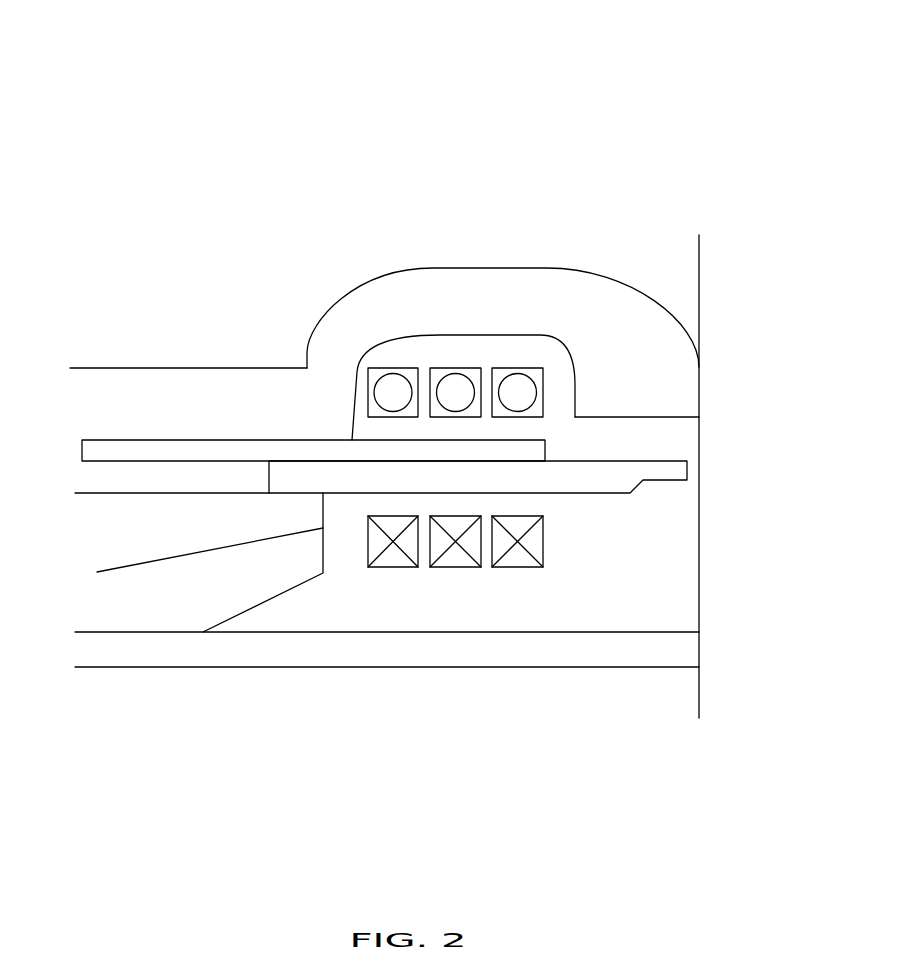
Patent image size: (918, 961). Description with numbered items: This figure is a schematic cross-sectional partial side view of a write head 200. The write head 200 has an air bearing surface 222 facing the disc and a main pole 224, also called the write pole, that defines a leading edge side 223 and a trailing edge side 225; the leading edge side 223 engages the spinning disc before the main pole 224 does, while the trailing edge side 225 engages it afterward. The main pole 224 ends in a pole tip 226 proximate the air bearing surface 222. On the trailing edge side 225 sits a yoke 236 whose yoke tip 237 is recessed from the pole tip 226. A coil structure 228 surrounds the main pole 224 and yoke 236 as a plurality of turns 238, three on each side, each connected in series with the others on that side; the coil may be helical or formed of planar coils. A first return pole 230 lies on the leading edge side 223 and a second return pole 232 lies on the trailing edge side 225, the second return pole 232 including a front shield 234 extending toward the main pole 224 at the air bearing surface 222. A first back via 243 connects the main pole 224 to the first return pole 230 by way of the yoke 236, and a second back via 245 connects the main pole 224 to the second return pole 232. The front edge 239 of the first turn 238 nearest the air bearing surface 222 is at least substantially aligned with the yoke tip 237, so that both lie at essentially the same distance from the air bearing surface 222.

The write head 200 is at (123, 69).
The air bearing surface 222 is at (699, 502).
The leading edge side 223 is at (587, 512).
The main pole 224 is at (627, 493).
The trailing edge side 225 is at (606, 444).
The pole tip 226 is at (688, 460).
The coil structure 228 is at (515, 586).
The first return pole 230 is at (150, 659).
The second return pole 232 is at (215, 406).
The front shield 234 is at (625, 417).
The yoke 236 is at (320, 440).
The yoke tip 237 is at (548, 452).
The turns 238 is at (517, 368).
The front edge 239 is at (547, 400).
The first back via 243 is at (97, 572).
The second back via 245 is at (355, 403).